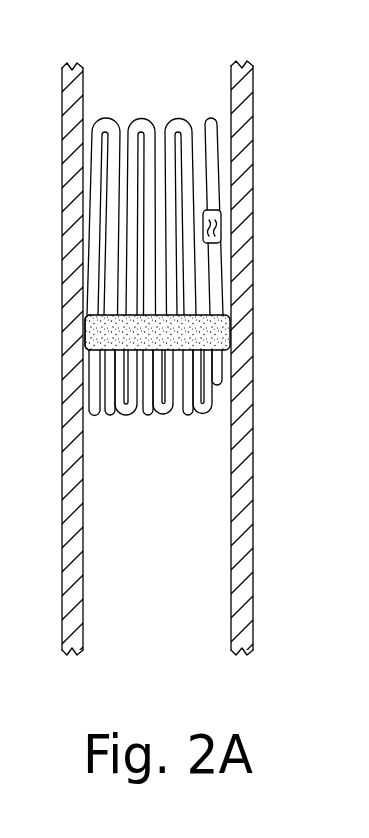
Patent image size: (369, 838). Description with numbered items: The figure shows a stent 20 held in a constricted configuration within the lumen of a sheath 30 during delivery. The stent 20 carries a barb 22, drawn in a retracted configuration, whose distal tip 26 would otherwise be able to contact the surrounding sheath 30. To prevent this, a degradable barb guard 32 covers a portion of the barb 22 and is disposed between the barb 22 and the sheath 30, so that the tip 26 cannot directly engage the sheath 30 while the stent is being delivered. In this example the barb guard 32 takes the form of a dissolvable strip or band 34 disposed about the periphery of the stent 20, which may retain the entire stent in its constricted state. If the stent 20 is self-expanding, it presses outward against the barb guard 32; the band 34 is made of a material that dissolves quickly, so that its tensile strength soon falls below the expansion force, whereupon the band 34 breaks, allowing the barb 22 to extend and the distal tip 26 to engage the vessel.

The stent 20 is at (166, 221).
The barb 22 is at (213, 276).
The distal tip 26 is at (215, 380).
The sheath 30 is at (253, 207).
The barb guard 32 is at (232, 326).
The dissolvable strip or band 34 is at (85, 326).